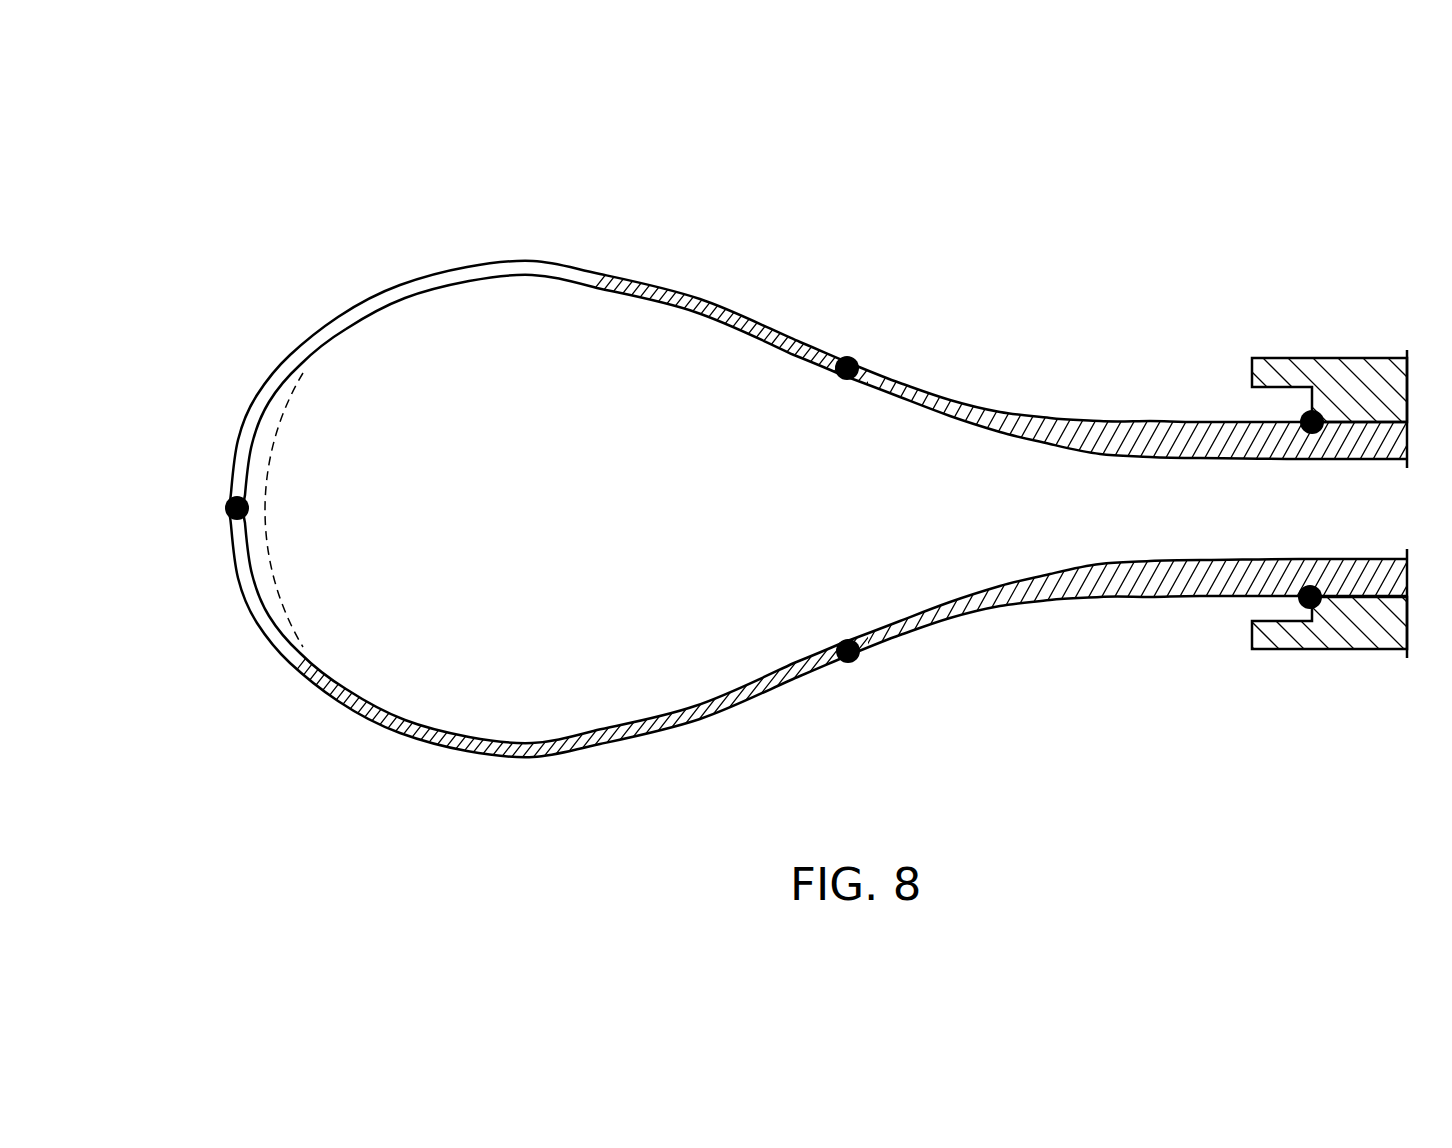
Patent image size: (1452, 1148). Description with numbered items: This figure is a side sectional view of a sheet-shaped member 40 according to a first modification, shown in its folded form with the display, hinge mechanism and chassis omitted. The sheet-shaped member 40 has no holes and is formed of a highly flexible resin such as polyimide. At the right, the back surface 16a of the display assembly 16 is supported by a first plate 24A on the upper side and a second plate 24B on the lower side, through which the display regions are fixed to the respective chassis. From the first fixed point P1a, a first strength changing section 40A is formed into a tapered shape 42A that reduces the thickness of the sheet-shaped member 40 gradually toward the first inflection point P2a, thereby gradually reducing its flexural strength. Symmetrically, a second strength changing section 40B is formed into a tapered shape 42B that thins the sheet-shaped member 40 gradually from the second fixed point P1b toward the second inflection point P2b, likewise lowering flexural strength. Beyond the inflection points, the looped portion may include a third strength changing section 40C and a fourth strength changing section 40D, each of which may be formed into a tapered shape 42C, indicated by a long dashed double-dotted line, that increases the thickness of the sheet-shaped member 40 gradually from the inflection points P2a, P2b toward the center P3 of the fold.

The sheet-shaped member 40 is at (357, 129).
The display assembly 16 is at (407, 129).
The first strength changing section 40A is at (1093, 395).
The second strength changing section 40B is at (1092, 626).
The third strength changing section 40C is at (507, 246).
The fourth strength changing section 40D is at (505, 774).
The tapered shape 42A is at (1160, 440).
The tapered shape 42B is at (1160, 578).
The tapered shape 42C is at (268, 509).
The first plate 24A is at (1337, 368).
The second plate 24B is at (1333, 640).
The back surface 16a is at (1383, 380).
The first fixed point P1a is at (1312, 434).
The second fixed point P1b is at (1310, 585).
The first inflection point P2a is at (849, 358).
The second inflection point P2b is at (849, 663).
The center P3 is at (226, 508).